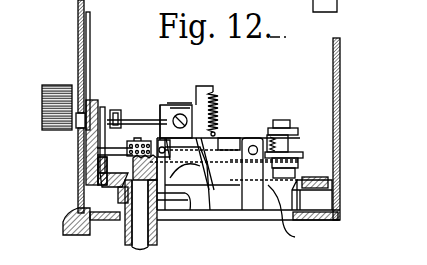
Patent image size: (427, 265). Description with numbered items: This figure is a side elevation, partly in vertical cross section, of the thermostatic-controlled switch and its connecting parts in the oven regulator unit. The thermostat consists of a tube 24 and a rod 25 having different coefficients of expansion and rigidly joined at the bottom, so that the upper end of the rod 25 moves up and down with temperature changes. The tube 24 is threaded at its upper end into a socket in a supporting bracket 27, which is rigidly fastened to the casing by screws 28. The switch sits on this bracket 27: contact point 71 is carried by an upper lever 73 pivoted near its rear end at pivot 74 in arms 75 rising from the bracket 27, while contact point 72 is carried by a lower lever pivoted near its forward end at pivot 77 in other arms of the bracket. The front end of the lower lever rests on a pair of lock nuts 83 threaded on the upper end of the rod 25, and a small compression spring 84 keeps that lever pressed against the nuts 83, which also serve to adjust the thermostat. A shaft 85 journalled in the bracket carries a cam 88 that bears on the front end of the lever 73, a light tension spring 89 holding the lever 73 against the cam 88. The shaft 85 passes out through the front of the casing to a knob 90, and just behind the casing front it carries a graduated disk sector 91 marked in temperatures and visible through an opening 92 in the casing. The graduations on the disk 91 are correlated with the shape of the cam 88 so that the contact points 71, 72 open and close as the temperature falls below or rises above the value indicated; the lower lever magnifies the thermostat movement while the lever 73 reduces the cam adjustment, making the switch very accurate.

The tube 24 is at (126, 230).
The rod 25 is at (140, 244).
The supporting bracket 27 is at (100, 180).
The screws 28 is at (312, 178).
The contact point 71 is at (288, 152).
The contact point 72 is at (284, 163).
The lever 73 is at (225, 137).
The pivot 74 is at (258, 137).
The arms 75 is at (247, 178).
The pivot 77 is at (157, 107).
The lock nuts 83 is at (137, 122).
The compression spring 84 is at (182, 176).
The shaft 85 is at (145, 140).
The cam 88 is at (166, 105).
The tension spring 89 is at (197, 87).
The knob 90 is at (60, 85).
The graduated disk sector 91 is at (88, 50).
The opening 92 is at (78, 20).